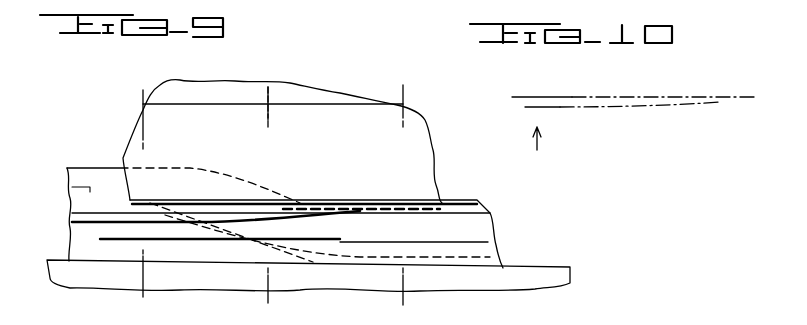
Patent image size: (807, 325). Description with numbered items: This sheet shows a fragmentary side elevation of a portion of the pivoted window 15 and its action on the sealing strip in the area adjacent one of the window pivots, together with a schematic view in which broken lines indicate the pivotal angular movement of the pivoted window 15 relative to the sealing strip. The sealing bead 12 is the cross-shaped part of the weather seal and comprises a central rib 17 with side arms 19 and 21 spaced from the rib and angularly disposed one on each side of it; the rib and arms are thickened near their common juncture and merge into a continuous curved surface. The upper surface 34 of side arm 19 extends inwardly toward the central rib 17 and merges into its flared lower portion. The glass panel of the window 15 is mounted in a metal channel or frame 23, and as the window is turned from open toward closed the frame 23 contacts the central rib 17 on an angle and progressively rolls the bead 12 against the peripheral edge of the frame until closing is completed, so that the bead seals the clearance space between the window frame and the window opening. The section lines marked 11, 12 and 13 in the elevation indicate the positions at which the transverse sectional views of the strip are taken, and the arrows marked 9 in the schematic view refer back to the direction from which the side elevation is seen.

In FIG. 10, the section view indicator for FIG. 9 is at (722, 125).
In FIG. 9, the section line 11 is at (172, 100).
In FIG. 9, the sealing bead 12 is at (295, 101).
In FIG. 10, the sealing bead 12 is at (572, 96).
In FIG. 9, the section line 13 is at (430, 99).
In FIG. 9, the pivoted window 15 is at (290, 81).
In FIG. 10, the pivoted window 15 is at (588, 108).
In FIG. 9, the central rib 17 is at (103, 168).
In FIG. 9, the side arm 19 is at (72, 213).
In FIG. 9, the side arm 21 is at (503, 255).
In FIG. 9, the channel or frame 23 is at (412, 170).
In FIG. 9, the upper surface of side arm 34 is at (72, 187).